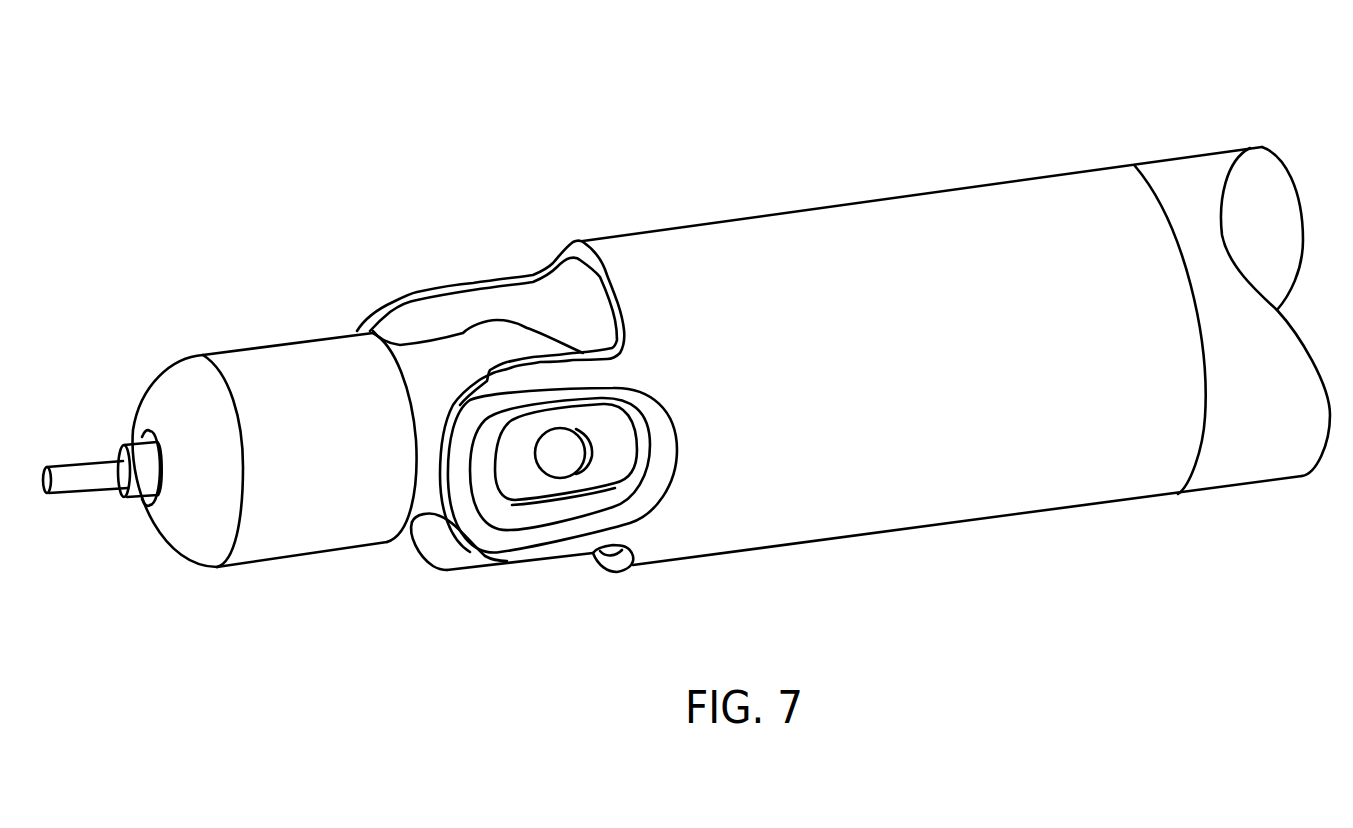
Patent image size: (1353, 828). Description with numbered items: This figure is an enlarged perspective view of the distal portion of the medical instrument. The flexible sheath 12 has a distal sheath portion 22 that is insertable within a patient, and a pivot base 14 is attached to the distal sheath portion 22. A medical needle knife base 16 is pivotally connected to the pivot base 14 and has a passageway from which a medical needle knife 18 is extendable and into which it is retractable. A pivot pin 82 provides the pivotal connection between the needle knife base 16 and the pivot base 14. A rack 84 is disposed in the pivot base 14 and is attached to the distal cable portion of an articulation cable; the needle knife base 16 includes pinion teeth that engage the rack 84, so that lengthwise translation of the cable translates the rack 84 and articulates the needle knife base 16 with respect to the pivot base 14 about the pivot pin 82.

The flexible sheath 12 is at (686, 322).
The pivot base 14 is at (877, 200).
The medical needle knife base 16 is at (267, 345).
The medical needle knife 18 is at (81, 462).
The distal sheath portion 22 is at (1208, 153).
The pivot pin 82 is at (568, 450).
The rack 84 is at (440, 560).